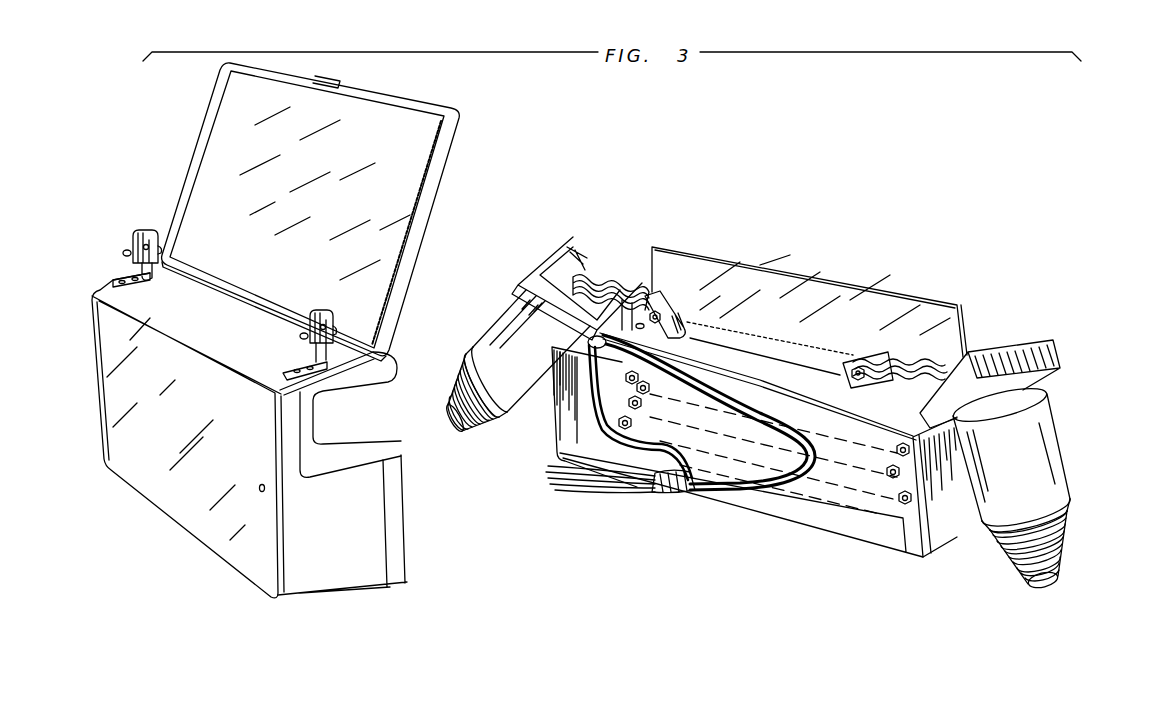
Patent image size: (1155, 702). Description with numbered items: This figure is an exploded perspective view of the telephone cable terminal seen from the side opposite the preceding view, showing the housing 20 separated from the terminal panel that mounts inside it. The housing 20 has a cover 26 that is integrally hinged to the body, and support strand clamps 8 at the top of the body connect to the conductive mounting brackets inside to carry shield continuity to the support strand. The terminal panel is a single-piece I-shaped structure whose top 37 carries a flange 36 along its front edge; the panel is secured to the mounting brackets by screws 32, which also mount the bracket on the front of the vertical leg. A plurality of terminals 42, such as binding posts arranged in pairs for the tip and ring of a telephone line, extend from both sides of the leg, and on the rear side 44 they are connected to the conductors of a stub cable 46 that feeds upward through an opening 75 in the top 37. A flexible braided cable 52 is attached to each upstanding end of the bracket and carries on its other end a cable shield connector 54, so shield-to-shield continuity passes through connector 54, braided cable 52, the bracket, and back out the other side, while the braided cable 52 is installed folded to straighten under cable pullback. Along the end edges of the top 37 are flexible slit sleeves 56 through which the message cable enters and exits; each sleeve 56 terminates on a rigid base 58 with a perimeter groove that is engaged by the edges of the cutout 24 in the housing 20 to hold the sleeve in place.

The support strand clamp 8 is at (131, 243).
The housing 20 is at (366, 590).
The cutout 24 is at (355, 418).
The cover 26 is at (438, 162).
The screws 32 is at (625, 377).
The flange 36 is at (890, 312).
The top 37 is at (767, 358).
The terminals 42 is at (890, 473).
The rear side 44 is at (790, 508).
The stub cable 46 is at (607, 493).
The braided cable 52 is at (613, 280).
The cable shield connector 54 is at (688, 325).
The sleeve 56 is at (1057, 457).
The base 58 is at (1035, 348).
The opening 75 is at (585, 344).